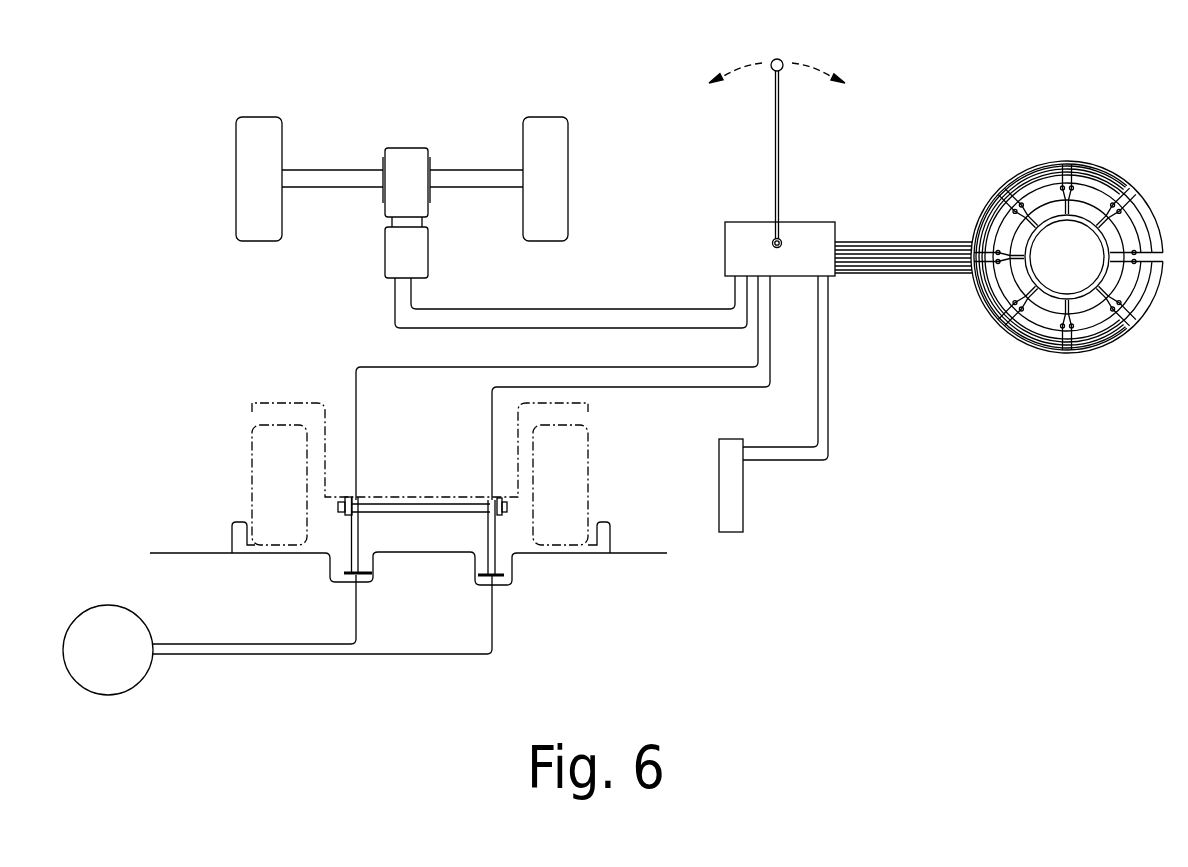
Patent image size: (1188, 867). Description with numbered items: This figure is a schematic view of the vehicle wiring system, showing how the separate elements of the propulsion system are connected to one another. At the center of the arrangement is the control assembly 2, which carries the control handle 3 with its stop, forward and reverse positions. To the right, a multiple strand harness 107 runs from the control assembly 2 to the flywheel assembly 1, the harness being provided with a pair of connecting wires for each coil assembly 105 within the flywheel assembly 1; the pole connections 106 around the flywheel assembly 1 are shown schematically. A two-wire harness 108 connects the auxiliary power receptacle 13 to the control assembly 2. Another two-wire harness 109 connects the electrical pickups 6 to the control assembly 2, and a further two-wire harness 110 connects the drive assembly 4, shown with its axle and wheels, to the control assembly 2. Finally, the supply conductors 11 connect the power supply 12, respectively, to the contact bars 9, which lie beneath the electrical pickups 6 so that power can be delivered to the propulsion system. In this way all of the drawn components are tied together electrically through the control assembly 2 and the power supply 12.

The flywheel assembly 1 is at (1067, 265).
The control assembly 2 is at (705, 199).
The control handle 3 is at (817, 52).
The drive assembly 4 is at (370, 130).
The electrical pickups 6 is at (329, 527).
The contact bars 9 is at (460, 584).
The supply conductors 11 is at (381, 639).
The power supply 12 is at (172, 681).
The auxiliary power receptacle 13 is at (776, 516).
The coil assembly 105 is at (1090, 207).
The stator pole windings 106 is at (1065, 188).
The multiple strand harness 107 is at (928, 275).
The two-wire harness 108 is at (830, 410).
The two-wire harness 109 is at (488, 413).
The two-wire harness 110 is at (563, 330).